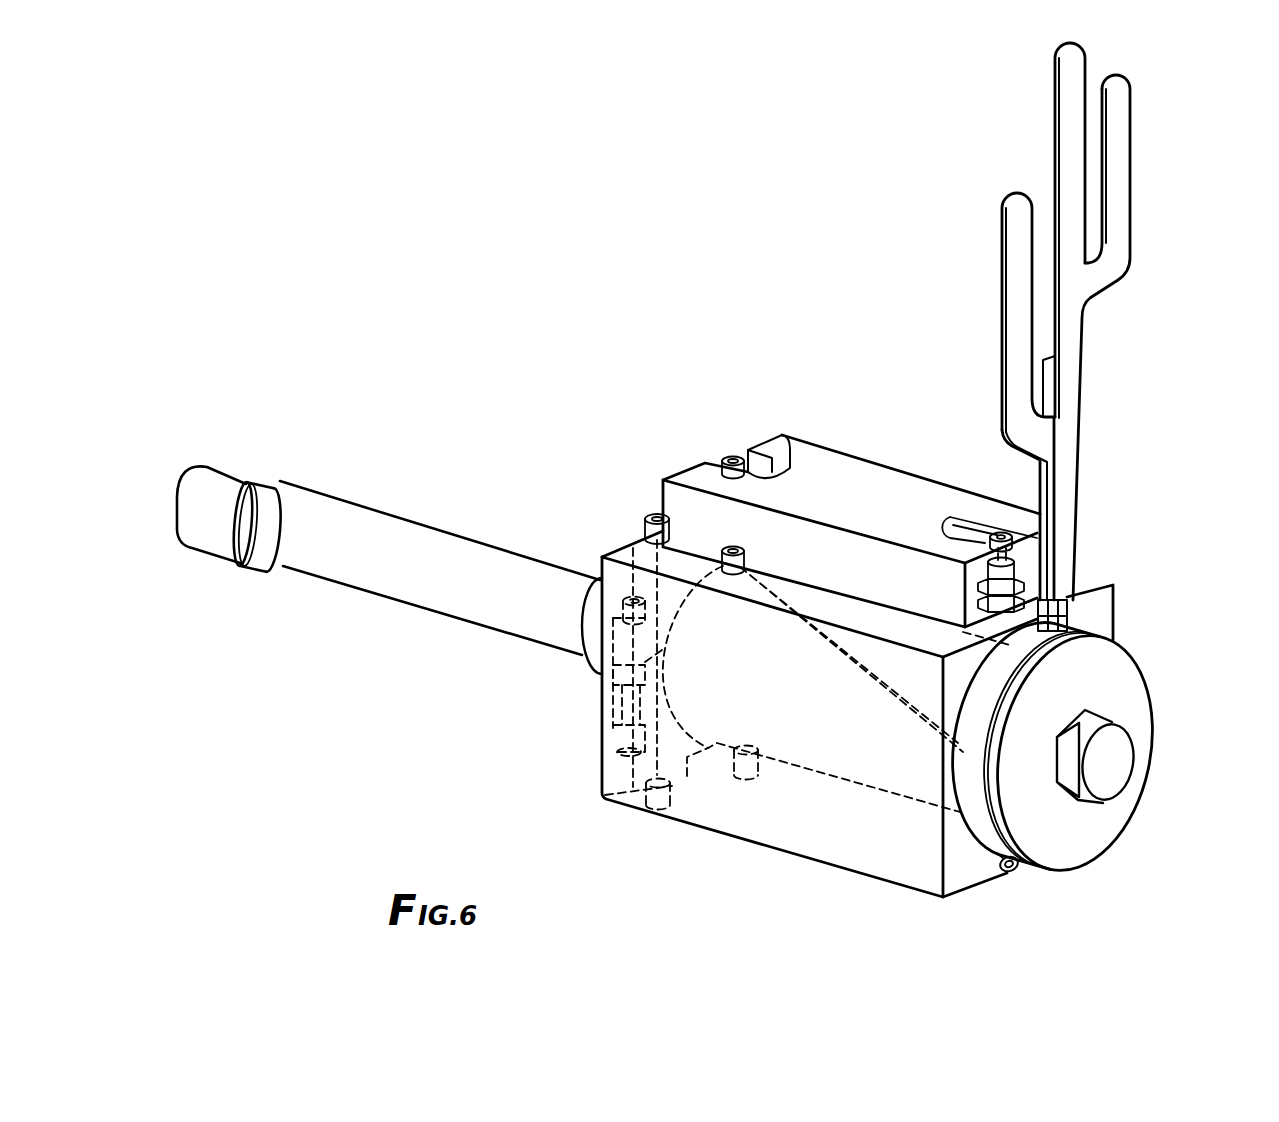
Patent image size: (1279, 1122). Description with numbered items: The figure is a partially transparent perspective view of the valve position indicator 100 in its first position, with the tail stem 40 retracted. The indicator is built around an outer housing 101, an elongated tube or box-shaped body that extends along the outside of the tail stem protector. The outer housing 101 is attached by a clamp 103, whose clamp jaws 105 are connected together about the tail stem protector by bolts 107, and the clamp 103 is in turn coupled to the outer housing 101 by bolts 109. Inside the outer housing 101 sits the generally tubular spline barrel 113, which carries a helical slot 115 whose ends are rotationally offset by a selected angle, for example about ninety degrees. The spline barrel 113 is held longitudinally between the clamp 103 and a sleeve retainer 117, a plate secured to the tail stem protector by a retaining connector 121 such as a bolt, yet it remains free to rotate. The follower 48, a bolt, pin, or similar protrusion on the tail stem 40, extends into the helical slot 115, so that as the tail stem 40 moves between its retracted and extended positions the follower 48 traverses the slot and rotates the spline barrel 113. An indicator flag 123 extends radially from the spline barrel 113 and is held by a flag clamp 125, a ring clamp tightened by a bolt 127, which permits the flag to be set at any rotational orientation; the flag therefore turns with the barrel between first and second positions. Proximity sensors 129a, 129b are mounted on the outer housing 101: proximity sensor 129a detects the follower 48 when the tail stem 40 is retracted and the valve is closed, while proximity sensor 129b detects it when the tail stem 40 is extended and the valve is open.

The valve position indicator 100 is at (548, 316).
The tail stem 40 is at (352, 498).
The follower 48 is at (723, 547).
The outer housing 101 is at (883, 880).
The clamp 103 is at (582, 787).
The clamp jaws 105 is at (623, 655).
The bolts 107 is at (624, 606).
The bolts 109 is at (649, 518).
The spline barrel 113 is at (798, 762).
The helical slot 115 is at (822, 640).
The sleeve retainer 117 is at (1063, 857).
The retaining connector 121 is at (1113, 778).
The indicator flag 123 is at (1133, 150).
The flag clamp 125 is at (1120, 600).
The bolt 127 is at (1007, 870).
The proximity sensor 129a is at (732, 455).
The proximity sensor 129b is at (997, 534).